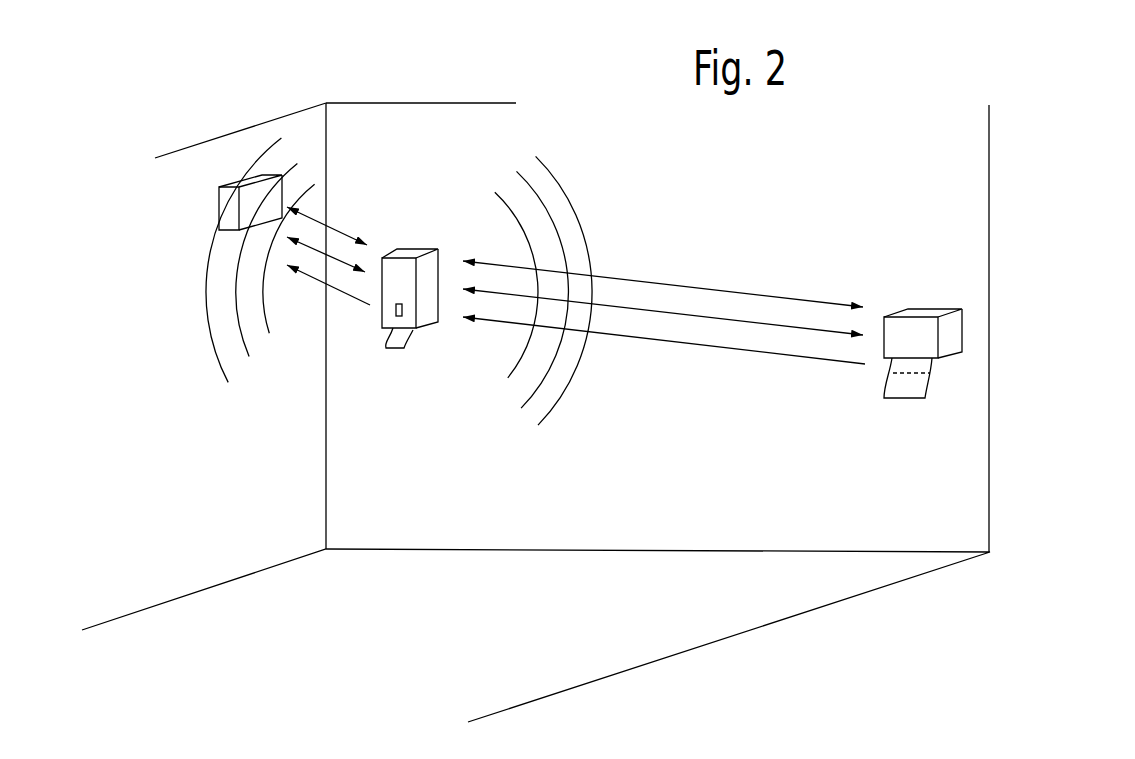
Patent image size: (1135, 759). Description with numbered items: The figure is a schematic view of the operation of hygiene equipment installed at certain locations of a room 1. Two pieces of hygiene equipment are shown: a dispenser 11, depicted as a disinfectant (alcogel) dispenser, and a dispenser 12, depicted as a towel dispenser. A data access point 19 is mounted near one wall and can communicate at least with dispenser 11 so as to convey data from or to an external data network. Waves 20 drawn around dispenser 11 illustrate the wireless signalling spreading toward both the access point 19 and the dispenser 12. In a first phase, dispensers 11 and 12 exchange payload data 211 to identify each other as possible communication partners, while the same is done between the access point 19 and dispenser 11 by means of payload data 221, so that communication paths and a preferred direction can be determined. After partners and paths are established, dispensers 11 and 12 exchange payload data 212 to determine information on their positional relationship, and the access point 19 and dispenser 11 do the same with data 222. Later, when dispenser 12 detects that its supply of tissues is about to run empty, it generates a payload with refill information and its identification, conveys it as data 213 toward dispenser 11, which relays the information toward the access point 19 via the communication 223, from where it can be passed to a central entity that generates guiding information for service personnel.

The room 1 is at (536, 412).
The disinfectant dispenser 11 is at (430, 327).
The towel dispenser 12 is at (933, 307).
The data access point 19 is at (219, 203).
The wireless signal waves 20 is at (220, 363).
The payload data 211 is at (652, 282).
The payload data 212 is at (703, 317).
The payload data 213 is at (748, 347).
The payload data 221 is at (333, 225).
The payload data 222 is at (352, 268).
The communication 223 is at (305, 277).